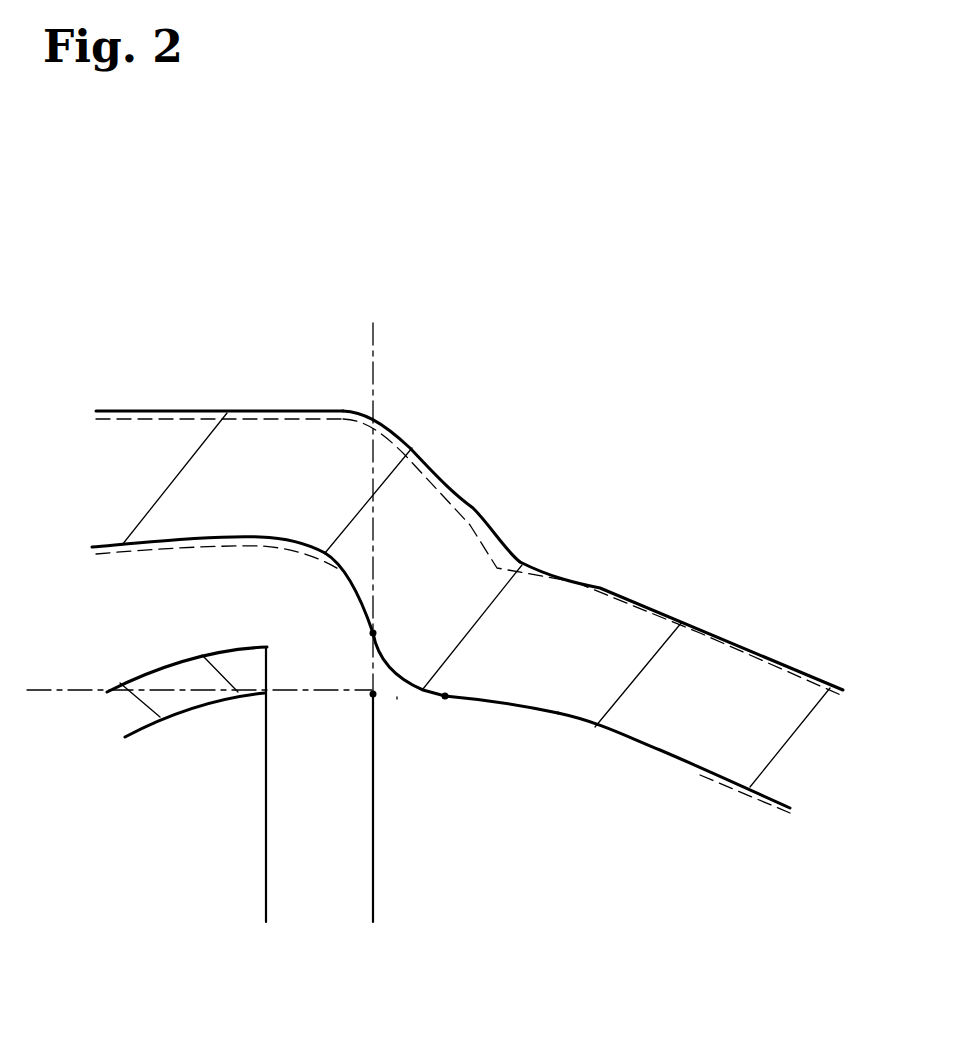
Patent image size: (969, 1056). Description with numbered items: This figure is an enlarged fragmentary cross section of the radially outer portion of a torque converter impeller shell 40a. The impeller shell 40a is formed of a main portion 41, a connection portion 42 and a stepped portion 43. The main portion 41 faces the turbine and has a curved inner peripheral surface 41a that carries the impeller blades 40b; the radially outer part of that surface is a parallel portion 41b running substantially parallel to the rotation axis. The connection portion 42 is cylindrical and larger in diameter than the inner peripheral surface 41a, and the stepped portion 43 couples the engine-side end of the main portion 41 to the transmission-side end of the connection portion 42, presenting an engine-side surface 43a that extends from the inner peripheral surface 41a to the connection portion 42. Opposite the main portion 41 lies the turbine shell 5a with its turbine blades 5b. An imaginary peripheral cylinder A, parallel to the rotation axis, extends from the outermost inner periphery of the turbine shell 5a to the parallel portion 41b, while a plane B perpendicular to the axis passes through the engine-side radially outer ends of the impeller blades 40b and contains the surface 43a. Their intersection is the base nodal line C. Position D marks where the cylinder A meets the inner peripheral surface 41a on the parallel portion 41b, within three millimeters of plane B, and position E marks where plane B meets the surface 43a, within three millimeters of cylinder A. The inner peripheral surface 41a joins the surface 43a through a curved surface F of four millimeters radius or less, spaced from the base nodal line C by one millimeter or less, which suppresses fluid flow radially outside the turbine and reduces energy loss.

The impeller shell 40a is at (468, 579).
The impeller blades 40b is at (377, 882).
The main portion 41 is at (638, 613).
The inner peripheral surface 41a is at (603, 727).
The parallel portion 41b is at (482, 703).
The connection portion 42 is at (175, 432).
The stepped portion 43 is at (428, 563).
The surface of the stepped portion 43a is at (363, 600).
The turbine shell 5a is at (183, 675).
The turbine blades 5b is at (255, 885).
The imaginary peripheral cylinder A is at (38, 687).
The plane B is at (377, 357).
The base nodal line C is at (371, 696).
The position D is at (445, 699).
The position E is at (370, 631).
The curved surface F is at (397, 699).